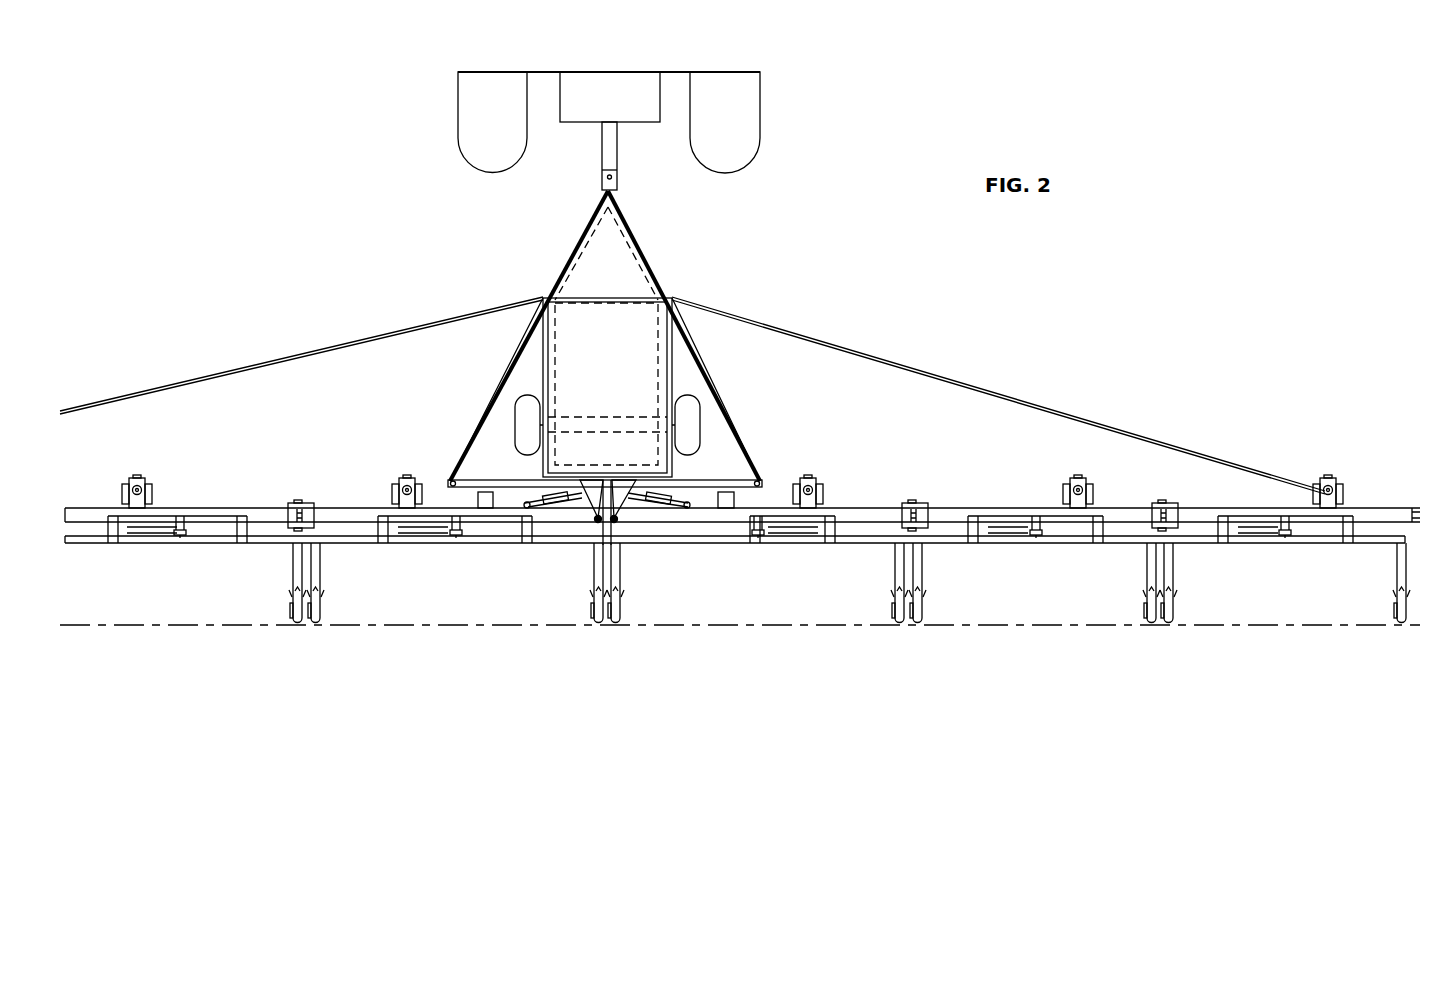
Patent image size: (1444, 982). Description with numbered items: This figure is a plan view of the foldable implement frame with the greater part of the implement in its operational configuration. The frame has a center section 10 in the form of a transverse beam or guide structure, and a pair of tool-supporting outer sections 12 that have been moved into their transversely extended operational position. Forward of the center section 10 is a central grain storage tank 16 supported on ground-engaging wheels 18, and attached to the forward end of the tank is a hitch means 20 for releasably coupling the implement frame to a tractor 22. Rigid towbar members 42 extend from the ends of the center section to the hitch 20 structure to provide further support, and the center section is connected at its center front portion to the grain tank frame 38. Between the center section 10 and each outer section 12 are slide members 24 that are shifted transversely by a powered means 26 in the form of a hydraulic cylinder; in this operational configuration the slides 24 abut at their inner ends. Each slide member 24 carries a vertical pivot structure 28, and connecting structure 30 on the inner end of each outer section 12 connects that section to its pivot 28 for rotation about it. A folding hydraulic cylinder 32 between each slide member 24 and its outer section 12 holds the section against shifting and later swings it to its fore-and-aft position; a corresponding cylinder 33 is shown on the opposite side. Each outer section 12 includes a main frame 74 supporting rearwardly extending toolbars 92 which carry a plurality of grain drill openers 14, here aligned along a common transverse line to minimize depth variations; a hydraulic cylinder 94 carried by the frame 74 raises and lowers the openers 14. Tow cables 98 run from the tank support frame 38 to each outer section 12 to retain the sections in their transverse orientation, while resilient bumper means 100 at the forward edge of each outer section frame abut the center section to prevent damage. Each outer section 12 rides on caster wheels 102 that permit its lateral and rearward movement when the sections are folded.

The center section 10 is at (486, 463).
The outer section 12 is at (205, 477).
The grain drill opener 14 is at (313, 560).
The grain storage tank 16 is at (628, 318).
The ground-engaging wheel 18 is at (527, 400).
The hitch means 20 is at (626, 238).
The tractor 22 is at (778, 138).
The slide member 24 is at (597, 510).
The powered means 26 is at (520, 480).
The vertical pivot structure 28 is at (614, 550).
The connecting structure 30 is at (598, 550).
The hydraulic cylinder 32 is at (553, 508).
The hydraulic cylinder 33 is at (648, 500).
The grain tank frame 38 is at (663, 357).
The rigid towbar member 42 is at (518, 350).
The main frame 74 is at (257, 507).
The toolbar 92 is at (360, 544).
The hydraulic cylinder 94 is at (186, 532).
The tow cable 98 is at (300, 352).
The resilient bumper means 100 is at (484, 500).
The caster wheel 102 is at (137, 478).